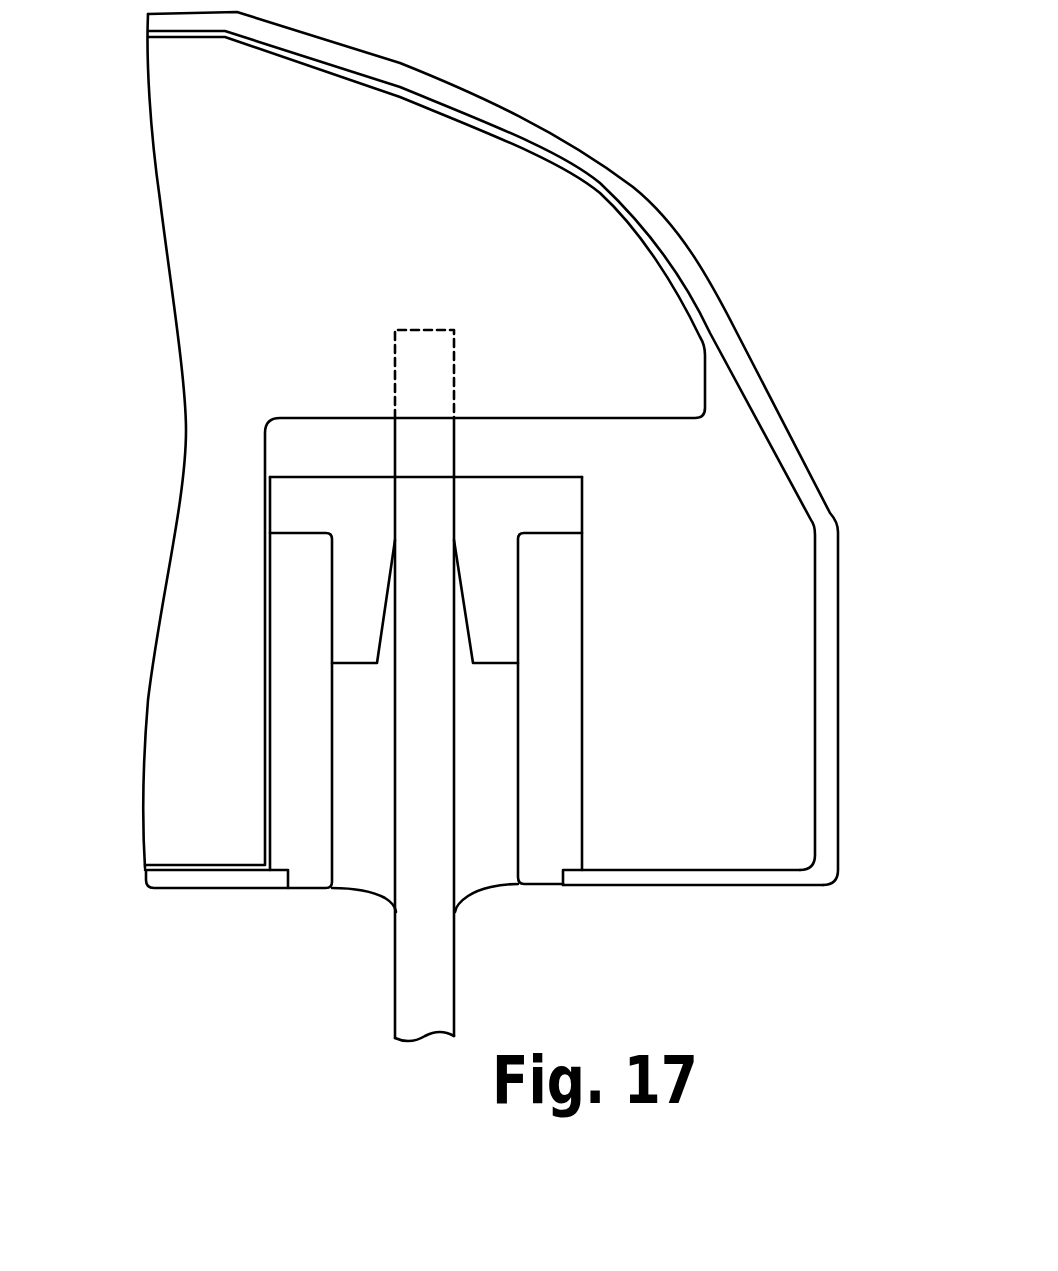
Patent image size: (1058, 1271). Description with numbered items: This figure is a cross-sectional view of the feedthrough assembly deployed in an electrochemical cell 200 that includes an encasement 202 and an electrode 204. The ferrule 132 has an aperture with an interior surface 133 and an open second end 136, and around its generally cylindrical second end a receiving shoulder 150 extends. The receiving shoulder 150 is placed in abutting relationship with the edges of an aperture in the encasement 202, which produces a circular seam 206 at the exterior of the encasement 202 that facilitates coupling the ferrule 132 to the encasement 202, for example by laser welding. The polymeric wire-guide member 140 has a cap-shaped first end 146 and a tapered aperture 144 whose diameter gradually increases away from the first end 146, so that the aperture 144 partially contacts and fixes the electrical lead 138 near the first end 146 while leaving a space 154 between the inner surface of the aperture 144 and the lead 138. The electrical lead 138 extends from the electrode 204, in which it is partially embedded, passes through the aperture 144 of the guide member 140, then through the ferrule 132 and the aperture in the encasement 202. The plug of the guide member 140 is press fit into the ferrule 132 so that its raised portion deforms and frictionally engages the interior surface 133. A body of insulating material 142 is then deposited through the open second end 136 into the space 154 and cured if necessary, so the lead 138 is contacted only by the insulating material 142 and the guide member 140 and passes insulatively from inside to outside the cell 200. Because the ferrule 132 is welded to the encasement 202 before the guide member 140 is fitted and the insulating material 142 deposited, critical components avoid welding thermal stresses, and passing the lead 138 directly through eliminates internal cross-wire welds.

The electrochemical cell 200 is at (490, 446).
The encasement 202 is at (697, 280).
The electrode 204 is at (330, 120).
The polymeric wire-guide member 140 is at (484, 631).
The first end 146 is at (290, 475).
The aperture 144 is at (383, 617).
The space 154 is at (465, 653).
The ferrule 132 is at (567, 613).
The interior surface 133 is at (332, 759).
The electrical lead 138 is at (408, 993).
The second end 136 is at (333, 890).
The body of insulating material 142 is at (484, 882).
The circular seam 206 is at (288, 892).
The receiving shoulder 150 is at (578, 877).